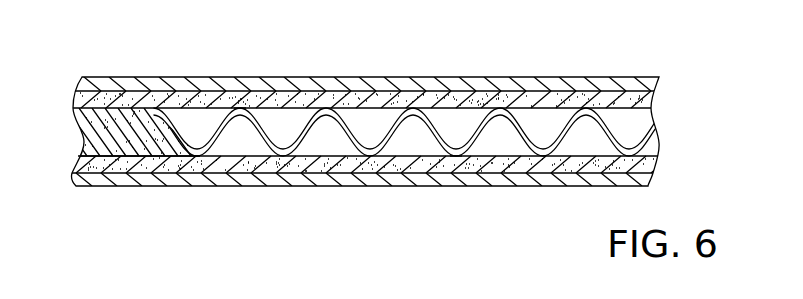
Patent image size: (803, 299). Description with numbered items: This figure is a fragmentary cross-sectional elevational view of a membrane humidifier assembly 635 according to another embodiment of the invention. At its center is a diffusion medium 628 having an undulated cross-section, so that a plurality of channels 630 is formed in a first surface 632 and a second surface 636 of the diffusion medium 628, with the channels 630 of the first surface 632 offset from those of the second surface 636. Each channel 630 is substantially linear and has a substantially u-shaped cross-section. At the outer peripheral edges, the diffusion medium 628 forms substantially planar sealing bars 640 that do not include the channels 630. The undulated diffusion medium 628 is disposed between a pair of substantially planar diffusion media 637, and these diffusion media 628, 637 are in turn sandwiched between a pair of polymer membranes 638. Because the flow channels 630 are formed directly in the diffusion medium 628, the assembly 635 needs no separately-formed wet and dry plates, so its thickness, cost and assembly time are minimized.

The membrane humidifier assembly 635 is at (119, 54).
The diffusion medium 628 is at (137, 113).
The channels 630 is at (195, 122).
The first surface 632 is at (241, 107).
The second surface 636 is at (458, 158).
The substantially planar diffusion media 637 is at (434, 98).
The polymer membranes 638 is at (541, 84).
The sealing bars 640 is at (124, 158).